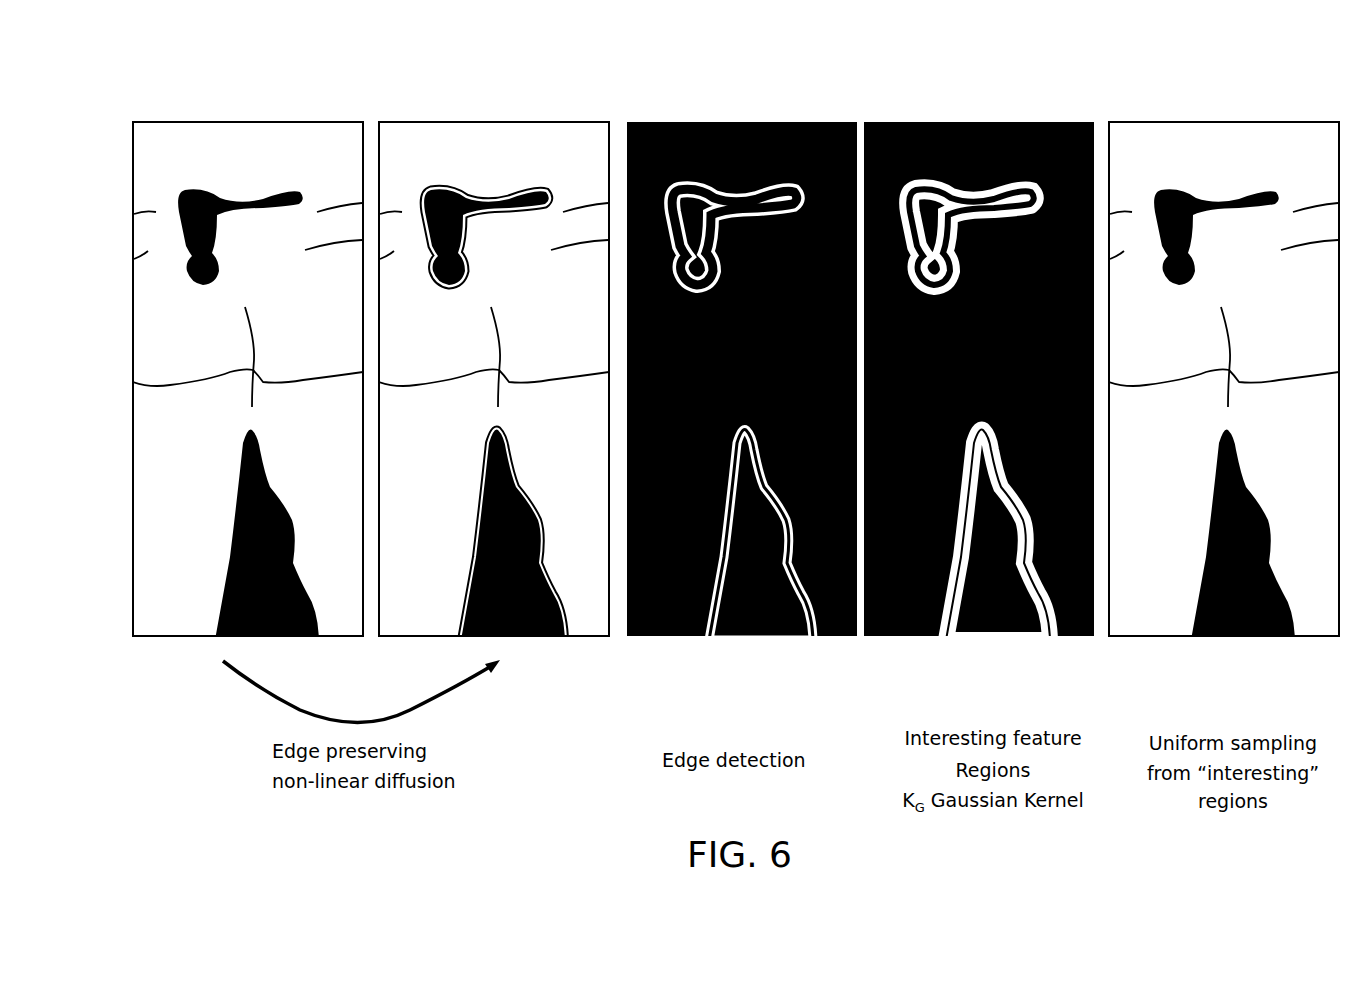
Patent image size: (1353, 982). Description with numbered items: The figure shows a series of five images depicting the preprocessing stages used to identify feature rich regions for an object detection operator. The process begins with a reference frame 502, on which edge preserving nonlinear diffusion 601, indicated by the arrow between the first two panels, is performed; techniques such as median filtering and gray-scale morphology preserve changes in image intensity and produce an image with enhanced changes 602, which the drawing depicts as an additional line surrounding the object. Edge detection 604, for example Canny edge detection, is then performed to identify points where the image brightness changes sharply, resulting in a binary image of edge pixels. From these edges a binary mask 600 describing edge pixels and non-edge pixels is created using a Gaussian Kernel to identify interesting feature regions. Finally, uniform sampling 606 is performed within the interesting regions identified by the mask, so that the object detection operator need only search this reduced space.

The reference frame 502 is at (288, 122).
The image with enhanced changes 602 is at (555, 122).
The edge detection 604 is at (773, 122).
The binary mask 600 is at (1023, 123).
The uniform sampling 606 is at (1260, 122).
The edge preserving nonlinear diffusion 601 is at (458, 690).